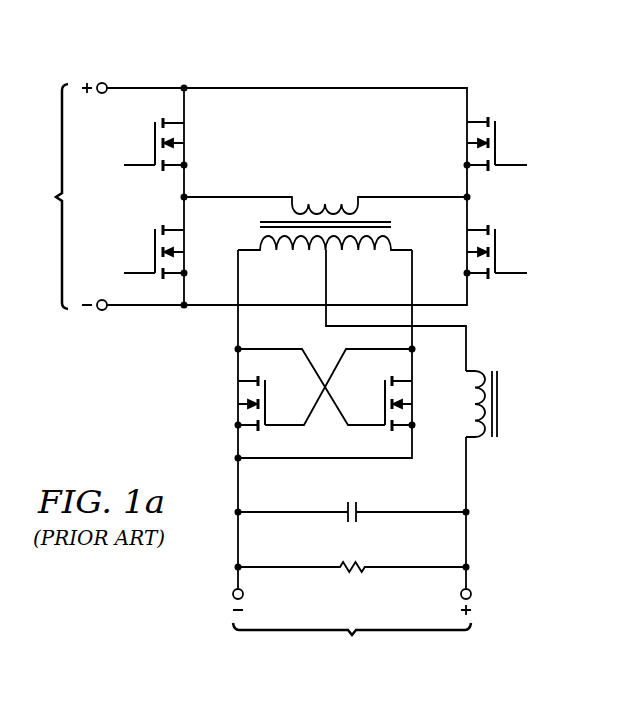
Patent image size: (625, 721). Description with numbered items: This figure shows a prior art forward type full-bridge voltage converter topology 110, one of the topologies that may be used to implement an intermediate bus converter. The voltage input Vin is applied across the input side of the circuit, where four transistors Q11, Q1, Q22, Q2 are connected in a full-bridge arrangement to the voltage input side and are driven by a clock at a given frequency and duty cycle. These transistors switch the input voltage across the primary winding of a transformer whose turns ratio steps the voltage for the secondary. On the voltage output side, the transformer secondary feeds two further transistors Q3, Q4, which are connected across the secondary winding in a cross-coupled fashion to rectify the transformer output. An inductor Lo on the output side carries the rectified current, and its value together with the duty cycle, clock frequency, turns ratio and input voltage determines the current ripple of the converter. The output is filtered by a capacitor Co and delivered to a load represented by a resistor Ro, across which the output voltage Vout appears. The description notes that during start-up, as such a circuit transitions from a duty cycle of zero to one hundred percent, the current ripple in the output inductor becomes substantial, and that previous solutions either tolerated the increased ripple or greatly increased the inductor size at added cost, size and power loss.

The forward type full-bridge voltage converter topology 110 is at (259, 67).
The primary switch transistor Q11 is at (173, 144).
The primary switch transistor Q1 is at (168, 252).
The primary switch transistor Q22 is at (476, 144).
The primary switch transistor Q2 is at (482, 252).
The secondary synchronous rectifier transistor Q3 is at (236, 403).
The secondary synchronous rectifier transistor Q4 is at (415, 403).
The output inductor Lo is at (495, 404).
The output capacitor Co is at (352, 499).
The load resistor Ro is at (352, 553).
The voltage input Vin is at (44, 196).
The output voltage Vout is at (352, 644).